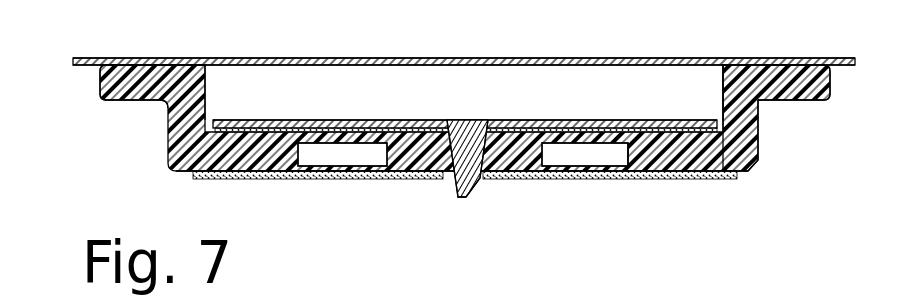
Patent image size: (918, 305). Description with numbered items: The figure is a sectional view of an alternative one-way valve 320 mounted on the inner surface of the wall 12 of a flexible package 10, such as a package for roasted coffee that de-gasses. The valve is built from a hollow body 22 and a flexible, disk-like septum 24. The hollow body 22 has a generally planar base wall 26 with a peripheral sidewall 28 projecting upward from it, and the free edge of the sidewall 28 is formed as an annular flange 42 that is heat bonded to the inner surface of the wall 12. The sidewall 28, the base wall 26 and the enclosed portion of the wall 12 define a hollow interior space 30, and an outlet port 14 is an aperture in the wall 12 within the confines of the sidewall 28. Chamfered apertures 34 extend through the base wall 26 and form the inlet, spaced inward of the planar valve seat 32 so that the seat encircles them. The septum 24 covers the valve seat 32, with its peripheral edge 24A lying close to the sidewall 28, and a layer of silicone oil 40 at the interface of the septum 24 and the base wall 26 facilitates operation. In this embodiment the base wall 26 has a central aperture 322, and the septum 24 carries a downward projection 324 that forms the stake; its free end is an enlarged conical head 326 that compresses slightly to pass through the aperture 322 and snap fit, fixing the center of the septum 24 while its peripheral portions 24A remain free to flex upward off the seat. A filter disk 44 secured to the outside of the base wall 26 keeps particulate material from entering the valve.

The flexible package 10 is at (425, 60).
The wall 12 is at (467, 60).
The outlet port 14 is at (252, 62).
The hollow body 22 is at (736, 96).
The septum 24 is at (526, 119).
The peripheral edge of the septum 24A is at (729, 72).
The base wall 26 is at (738, 152).
The sidewall 28 is at (183, 119).
The hollow interior space 30 is at (641, 87).
The valve seat 32 is at (664, 141).
The chamfered apertures 34 is at (332, 153).
The silicone oil 40 is at (383, 127).
The annular flange 42 is at (779, 91).
The filter disk 44 is at (194, 172).
The valve 320 is at (765, 135).
The aperture 322 is at (509, 173).
The projection 324 is at (463, 153).
The enlarged head 326 is at (451, 184).